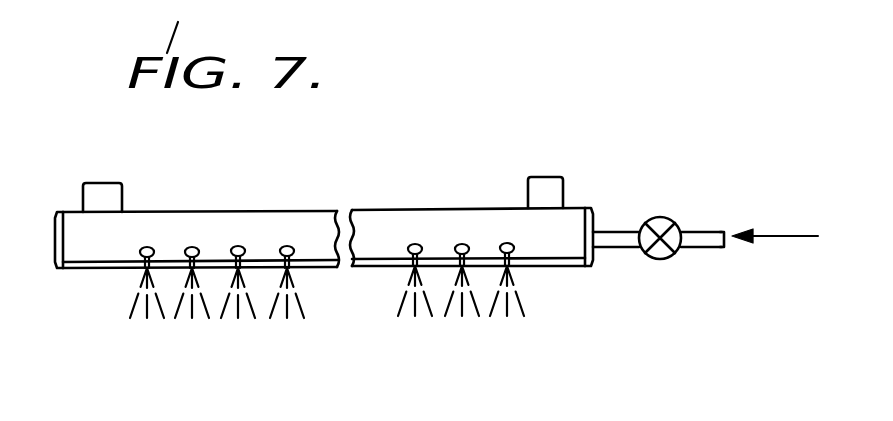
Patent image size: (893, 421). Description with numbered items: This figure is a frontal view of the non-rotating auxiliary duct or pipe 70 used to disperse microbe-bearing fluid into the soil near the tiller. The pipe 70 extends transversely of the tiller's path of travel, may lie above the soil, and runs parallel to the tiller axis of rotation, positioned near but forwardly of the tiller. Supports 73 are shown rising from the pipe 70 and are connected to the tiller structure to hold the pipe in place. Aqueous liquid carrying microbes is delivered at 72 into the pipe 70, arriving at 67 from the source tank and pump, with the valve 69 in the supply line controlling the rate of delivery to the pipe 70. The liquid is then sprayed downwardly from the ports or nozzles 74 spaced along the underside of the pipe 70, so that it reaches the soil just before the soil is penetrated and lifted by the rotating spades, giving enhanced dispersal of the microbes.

The liquid delivery to pipe 67 is at (787, 236).
The valve 69 is at (650, 257).
The auxiliary duct or pipe 70 is at (368, 217).
The liquid delivery point 72 is at (622, 230).
The supports 73 is at (83, 188).
The ports or nozzles 74 is at (191, 246).